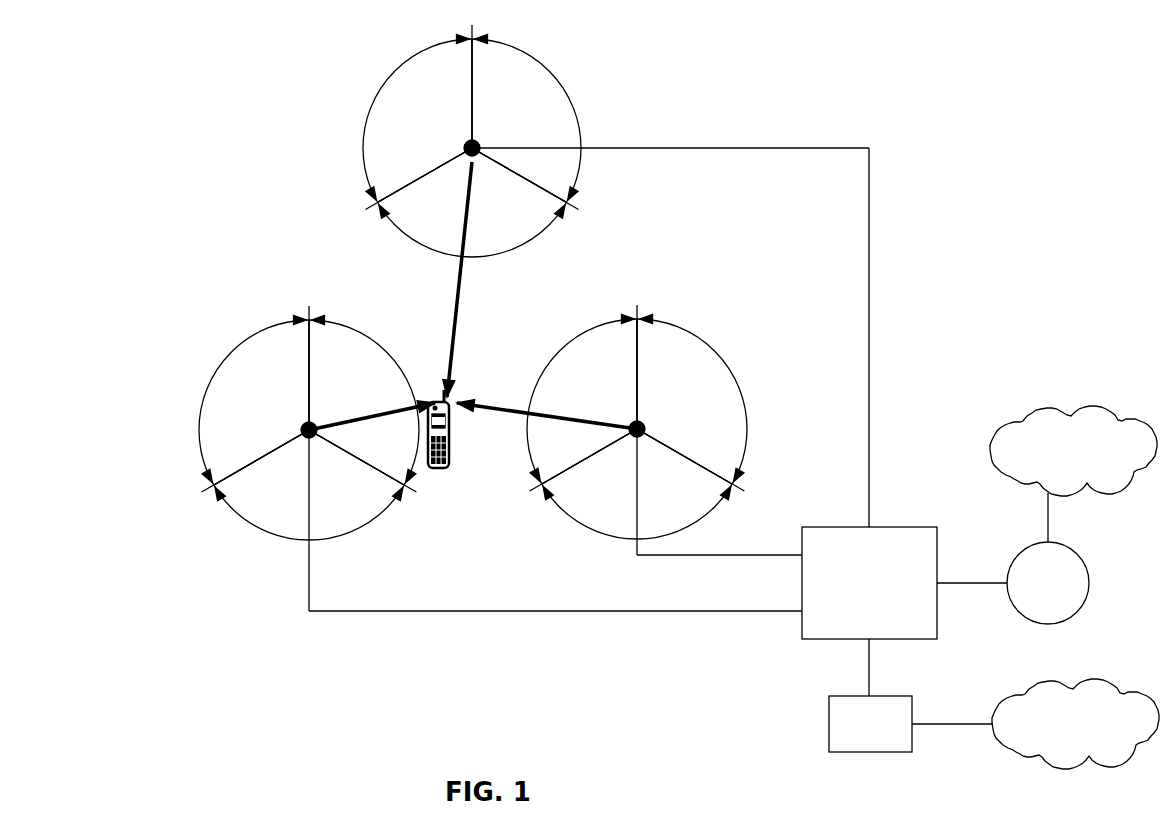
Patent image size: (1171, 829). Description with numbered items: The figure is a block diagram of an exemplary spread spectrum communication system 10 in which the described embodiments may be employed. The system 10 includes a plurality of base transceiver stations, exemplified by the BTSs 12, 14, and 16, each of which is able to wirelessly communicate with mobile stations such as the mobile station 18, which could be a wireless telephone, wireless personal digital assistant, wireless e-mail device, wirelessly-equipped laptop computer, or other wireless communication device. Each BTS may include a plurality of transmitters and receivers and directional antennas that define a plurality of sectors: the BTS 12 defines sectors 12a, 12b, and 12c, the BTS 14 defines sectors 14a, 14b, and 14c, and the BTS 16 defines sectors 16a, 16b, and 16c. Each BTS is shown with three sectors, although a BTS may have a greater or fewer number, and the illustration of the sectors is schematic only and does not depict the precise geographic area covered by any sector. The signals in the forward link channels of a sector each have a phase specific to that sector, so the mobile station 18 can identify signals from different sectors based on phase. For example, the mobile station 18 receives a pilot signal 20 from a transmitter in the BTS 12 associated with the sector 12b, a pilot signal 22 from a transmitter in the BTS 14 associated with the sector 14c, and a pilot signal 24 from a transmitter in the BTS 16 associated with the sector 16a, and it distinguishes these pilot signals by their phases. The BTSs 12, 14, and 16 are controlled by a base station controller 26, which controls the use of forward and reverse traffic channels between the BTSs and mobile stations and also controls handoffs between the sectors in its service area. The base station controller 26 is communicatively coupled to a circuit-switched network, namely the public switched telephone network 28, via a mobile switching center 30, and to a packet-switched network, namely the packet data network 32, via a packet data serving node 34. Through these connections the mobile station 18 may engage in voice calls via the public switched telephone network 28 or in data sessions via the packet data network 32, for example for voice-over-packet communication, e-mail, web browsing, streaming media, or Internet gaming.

The spread spectrum communication system 10 is at (262, 717).
The base transceiver station 12 is at (308, 422).
The sector 12a is at (265, 368).
The sector 12b is at (333, 368).
The sector 12c is at (321, 493).
The base transceiver station 14 is at (472, 138).
The sector 14a is at (401, 133).
The sector 14b is at (498, 88).
The sector 14c is at (501, 223).
The base transceiver station 16 is at (637, 419).
The sector 16a is at (580, 365).
The sector 16b is at (658, 372).
The sector 16c is at (655, 502).
The mobile station 18 is at (452, 443).
The pilot signal 20 is at (355, 421).
The pilot signal 22 is at (450, 340).
The pilot signal 24 is at (515, 407).
The base station controller 26 is at (910, 525).
The public switched telephone network 28 is at (1097, 405).
The mobile switching center 30 is at (1090, 582).
The packet data network 32 is at (1100, 681).
The packet data serving node 34 is at (829, 724).